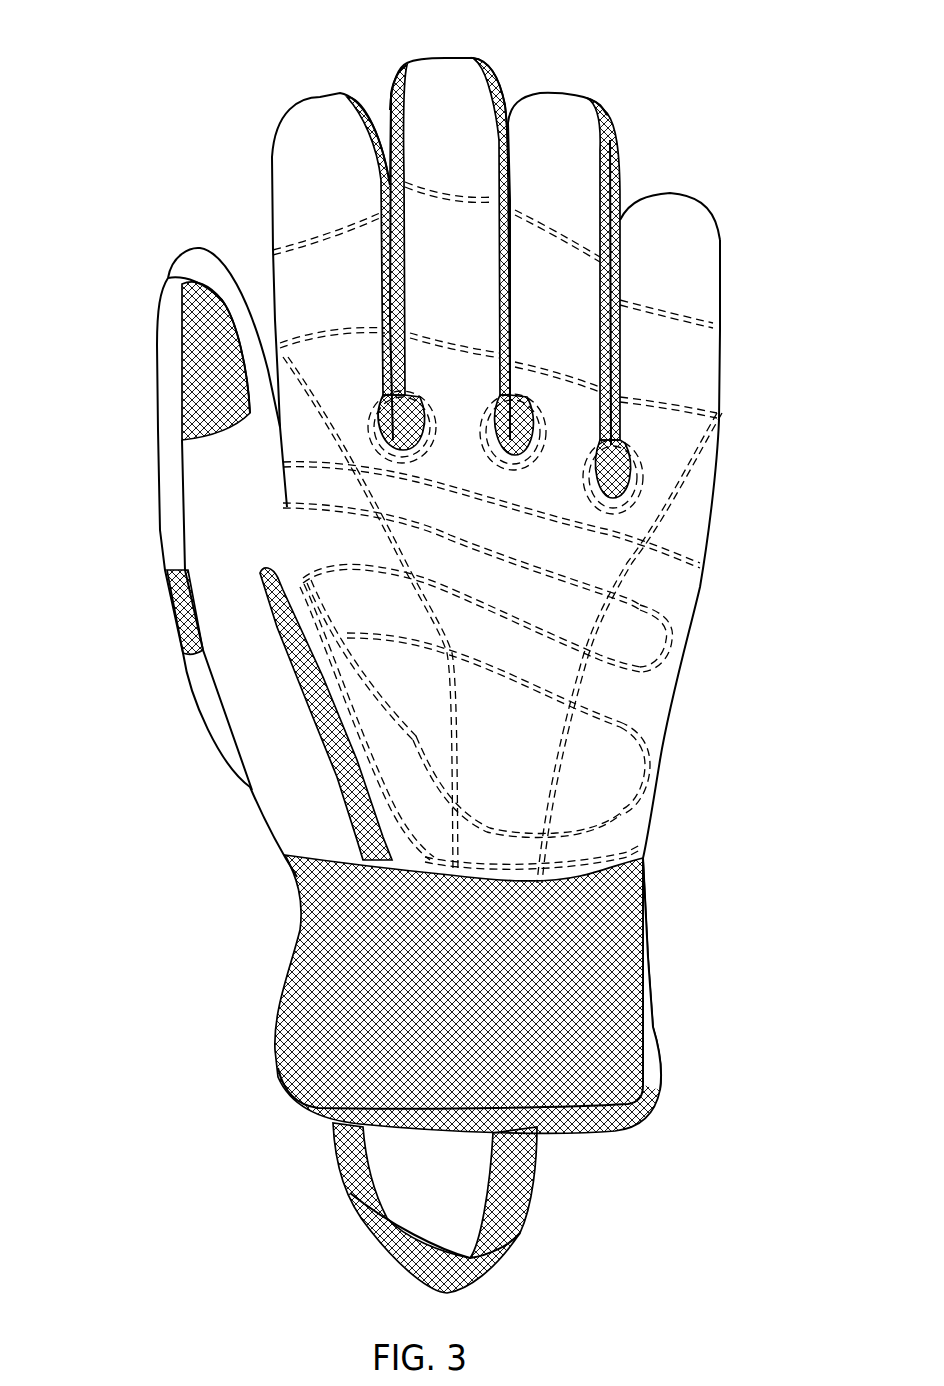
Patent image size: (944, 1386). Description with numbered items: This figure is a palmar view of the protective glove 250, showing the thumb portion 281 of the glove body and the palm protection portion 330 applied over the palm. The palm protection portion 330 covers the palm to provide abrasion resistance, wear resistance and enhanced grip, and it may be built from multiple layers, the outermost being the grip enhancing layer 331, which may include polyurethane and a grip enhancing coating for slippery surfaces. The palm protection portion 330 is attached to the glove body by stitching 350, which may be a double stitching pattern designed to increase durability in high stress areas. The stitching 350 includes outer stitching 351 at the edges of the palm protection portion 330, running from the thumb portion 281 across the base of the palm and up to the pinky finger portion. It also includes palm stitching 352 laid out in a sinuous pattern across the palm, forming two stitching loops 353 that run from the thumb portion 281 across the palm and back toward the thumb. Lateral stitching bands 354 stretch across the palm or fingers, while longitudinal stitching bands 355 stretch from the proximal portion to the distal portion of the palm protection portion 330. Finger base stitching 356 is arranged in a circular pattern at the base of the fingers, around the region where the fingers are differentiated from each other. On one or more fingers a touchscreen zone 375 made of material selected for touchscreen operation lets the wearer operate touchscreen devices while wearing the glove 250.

The protective glove 250 is at (228, 93).
The touchscreen zone 375 is at (453, 57).
The finger base stitching 356 is at (637, 450).
The lateral stitching bands 354 is at (610, 527).
The thumb portion 281 is at (210, 508).
The grip enhancing layer 331 is at (548, 609).
The palm protection portion 330 is at (593, 563).
The palm stitching 352 is at (670, 637).
The stitching loops 353 is at (650, 670).
The longitudinal stitching bands 355 is at (560, 757).
The stitching 350 is at (563, 767).
The outer stitching 351 is at (640, 857).